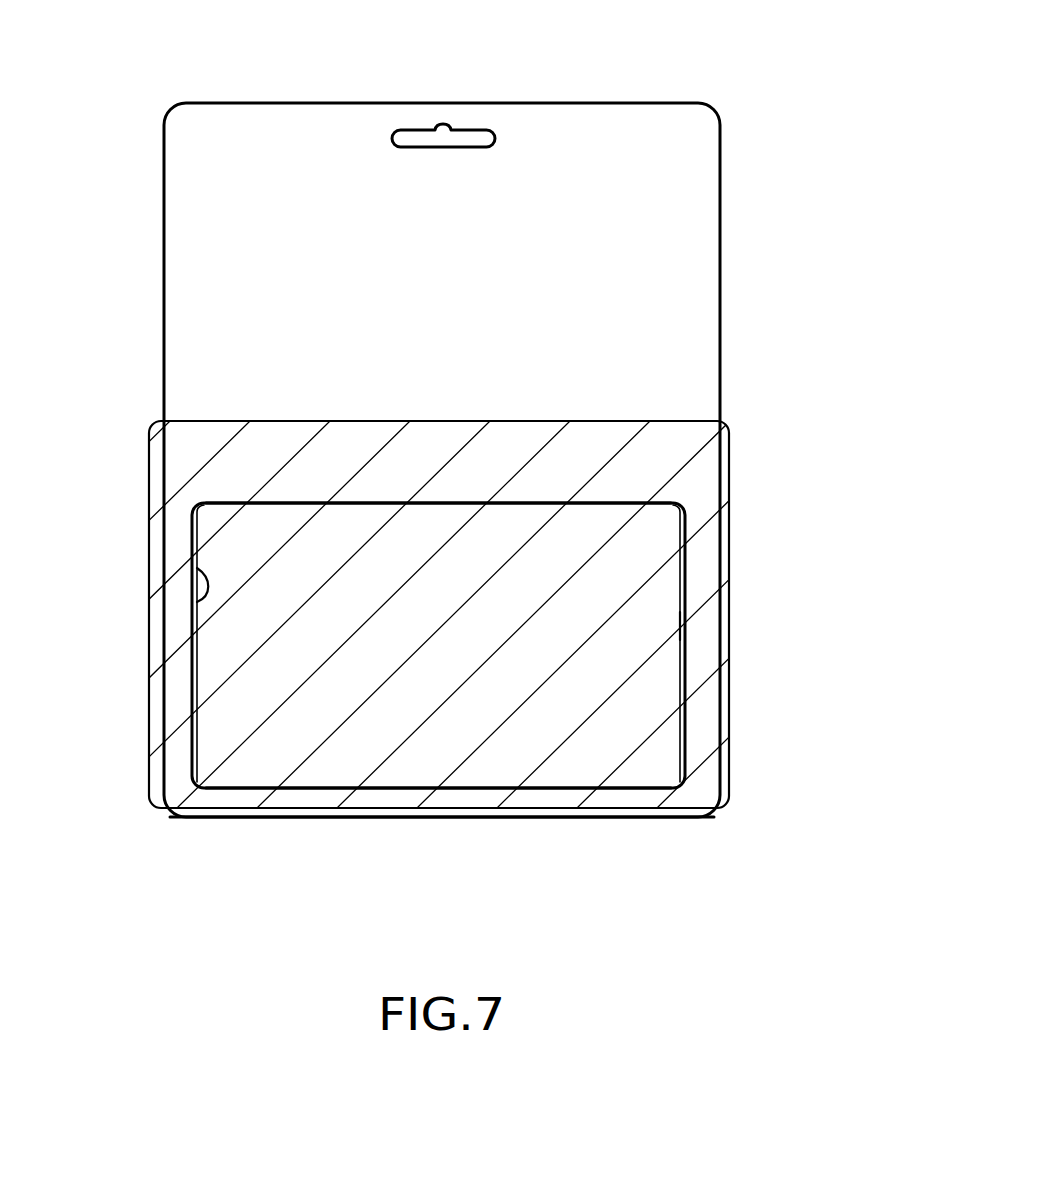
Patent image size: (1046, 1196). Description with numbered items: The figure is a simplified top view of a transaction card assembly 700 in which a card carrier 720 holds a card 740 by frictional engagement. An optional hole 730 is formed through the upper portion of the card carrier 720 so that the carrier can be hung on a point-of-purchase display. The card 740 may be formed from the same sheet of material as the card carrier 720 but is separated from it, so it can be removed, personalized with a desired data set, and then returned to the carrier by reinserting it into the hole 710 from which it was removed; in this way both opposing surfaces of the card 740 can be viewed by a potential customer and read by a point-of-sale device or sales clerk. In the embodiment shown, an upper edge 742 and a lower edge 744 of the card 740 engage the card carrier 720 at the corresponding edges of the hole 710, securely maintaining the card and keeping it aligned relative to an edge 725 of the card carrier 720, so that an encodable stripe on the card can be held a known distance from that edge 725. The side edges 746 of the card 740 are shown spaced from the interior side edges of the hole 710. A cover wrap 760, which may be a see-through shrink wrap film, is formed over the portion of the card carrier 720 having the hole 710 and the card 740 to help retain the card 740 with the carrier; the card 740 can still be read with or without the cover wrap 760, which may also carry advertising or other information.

The transaction card assembly 700 is at (523, 466).
The hole 710 is at (439, 624).
The card carrier 720 is at (495, 416).
The edge 725 is at (446, 810).
The hole 730 is at (460, 137).
The card 740 is at (585, 772).
The upper edge 742 is at (393, 503).
The lower edge 744 is at (380, 787).
The side edges 746 is at (197, 570).
The cover wrap 760 is at (705, 438).